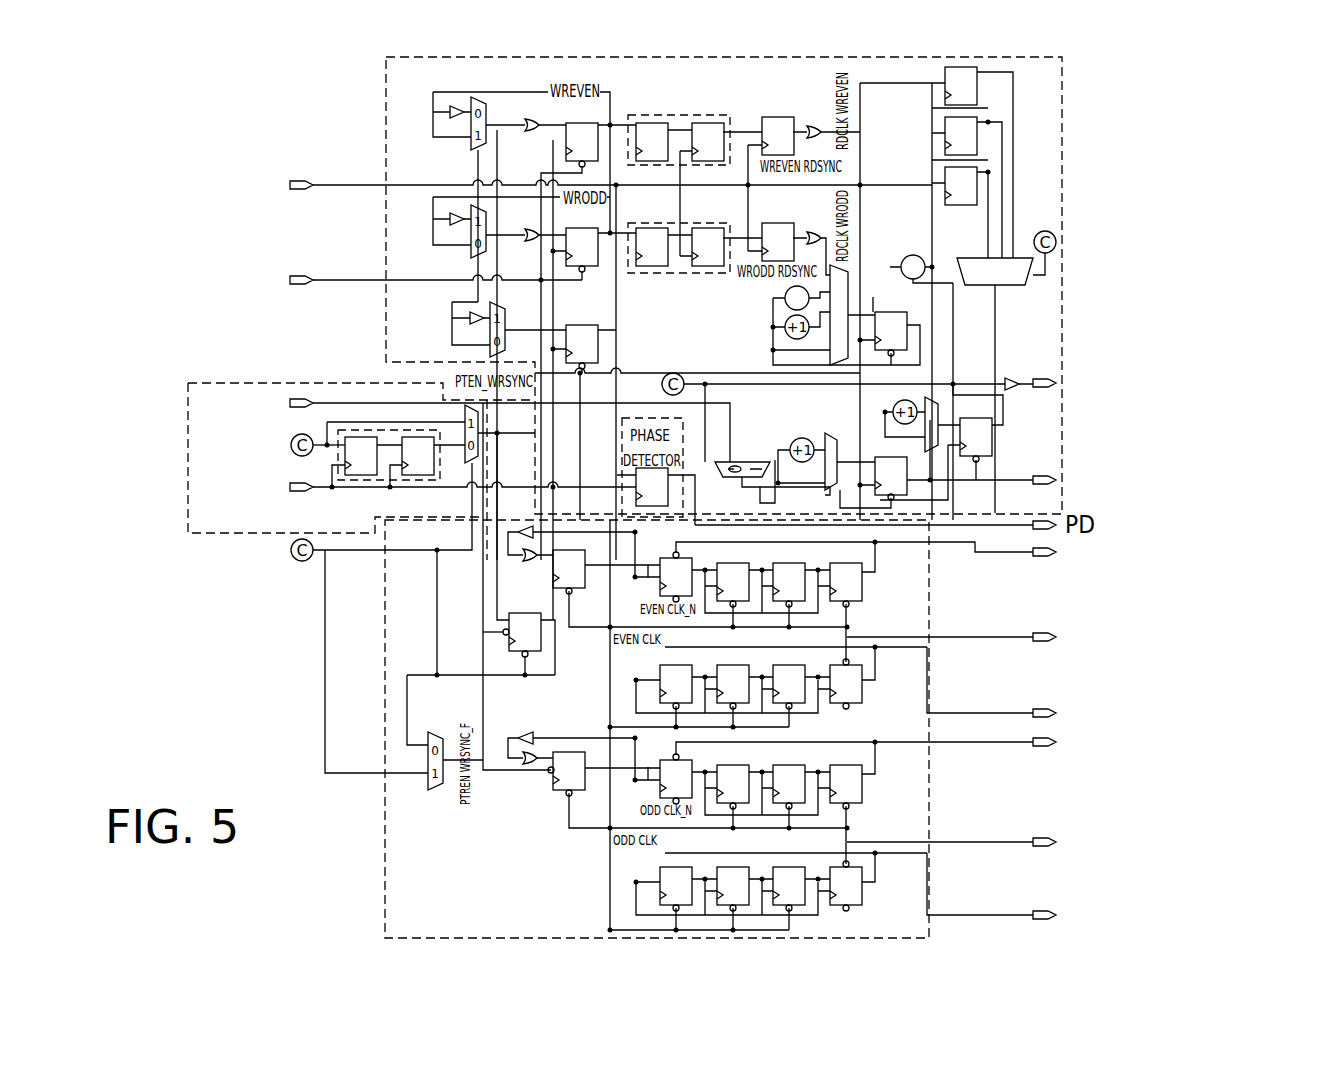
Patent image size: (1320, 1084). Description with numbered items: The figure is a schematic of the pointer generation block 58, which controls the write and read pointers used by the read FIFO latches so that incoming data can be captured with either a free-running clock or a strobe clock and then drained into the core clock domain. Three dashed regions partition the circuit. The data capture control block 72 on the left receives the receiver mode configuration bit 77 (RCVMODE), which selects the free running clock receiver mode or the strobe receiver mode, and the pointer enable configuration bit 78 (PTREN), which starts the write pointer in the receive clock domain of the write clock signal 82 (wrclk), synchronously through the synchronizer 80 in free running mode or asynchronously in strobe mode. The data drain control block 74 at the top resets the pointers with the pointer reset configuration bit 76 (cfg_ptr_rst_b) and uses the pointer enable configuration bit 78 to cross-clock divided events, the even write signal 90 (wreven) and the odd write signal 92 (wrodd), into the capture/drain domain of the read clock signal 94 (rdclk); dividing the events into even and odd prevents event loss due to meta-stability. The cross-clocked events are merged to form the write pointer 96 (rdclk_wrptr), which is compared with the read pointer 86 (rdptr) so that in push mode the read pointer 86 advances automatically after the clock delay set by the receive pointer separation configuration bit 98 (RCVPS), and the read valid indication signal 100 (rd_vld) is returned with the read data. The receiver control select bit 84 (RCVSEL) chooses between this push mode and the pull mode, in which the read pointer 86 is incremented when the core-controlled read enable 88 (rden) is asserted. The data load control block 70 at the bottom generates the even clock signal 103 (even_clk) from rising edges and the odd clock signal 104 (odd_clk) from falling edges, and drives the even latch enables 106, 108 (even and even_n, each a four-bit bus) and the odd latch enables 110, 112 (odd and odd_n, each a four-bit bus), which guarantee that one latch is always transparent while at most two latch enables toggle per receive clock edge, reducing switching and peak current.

The pointer generation block 58 is at (1182, 150).
The data load control block 70 is at (385, 870).
The data capture control block 72 is at (320, 383).
The data drain control block 74 is at (1062, 80).
The pointer reset configuration bit 76 is at (300, 275).
The receiver mode configuration bit 77 is at (225, 520).
The pointer enable configuration bit 78 is at (225, 445).
The synchronizer 80 is at (385, 430).
The write clock signal 82 is at (205, 487).
The receiver control select bit 84 is at (672, 338).
The read pointer 86 is at (1152, 482).
The core-controlled read enable 88 is at (220, 403).
The even write signal 90 is at (578, 70).
The odd write signal 92 is at (600, 216).
The read clock signal 94 is at (300, 180).
The write pointer 96 is at (873, 225).
The receive pointer separation configuration bit 98 is at (1042, 170).
The read valid indication signal 100 is at (1155, 384).
The even clock signal 103 is at (1177, 712).
The odd clock signal 104 is at (1165, 917).
The even latch enable 106 is at (1170, 554).
The even latch enable 108 is at (1200, 638).
The odd latch enable 110 is at (1162, 744).
The odd latch enable 112 is at (1200, 845).